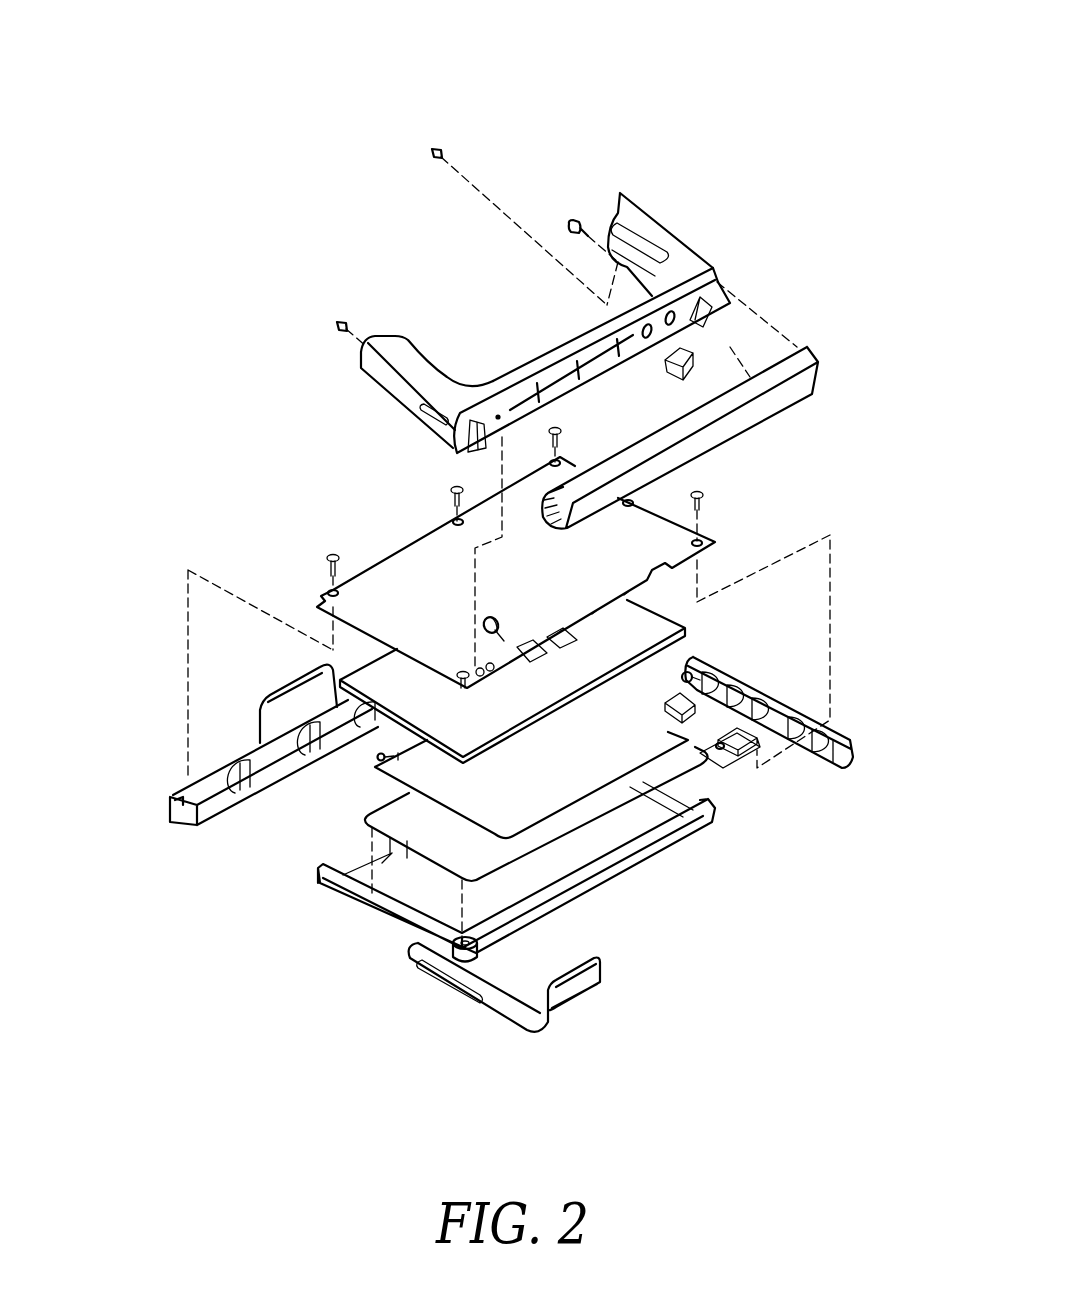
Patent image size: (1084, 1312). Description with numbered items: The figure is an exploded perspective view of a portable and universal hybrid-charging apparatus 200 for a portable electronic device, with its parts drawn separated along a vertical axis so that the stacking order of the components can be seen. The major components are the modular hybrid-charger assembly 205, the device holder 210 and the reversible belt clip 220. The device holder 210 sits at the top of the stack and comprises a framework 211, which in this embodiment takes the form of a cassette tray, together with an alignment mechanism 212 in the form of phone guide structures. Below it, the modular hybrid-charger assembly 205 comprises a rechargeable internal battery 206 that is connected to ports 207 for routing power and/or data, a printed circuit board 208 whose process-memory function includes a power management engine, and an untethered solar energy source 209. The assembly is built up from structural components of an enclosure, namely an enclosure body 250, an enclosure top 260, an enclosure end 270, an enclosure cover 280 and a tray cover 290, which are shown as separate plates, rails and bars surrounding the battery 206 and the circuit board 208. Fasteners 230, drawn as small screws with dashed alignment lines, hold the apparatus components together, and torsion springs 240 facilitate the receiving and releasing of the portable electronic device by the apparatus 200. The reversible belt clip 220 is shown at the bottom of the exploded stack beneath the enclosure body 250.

The apparatus 200 is at (840, 70).
The modular hybrid-charger assembly 205 is at (120, 568).
The rechargeable internal battery 206 is at (628, 614).
The ports 207 is at (706, 356).
The printed circuit board 208 is at (627, 737).
The untethered solar energy source 209 is at (372, 823).
The device holder 210 is at (878, 188).
The framework 211 is at (528, 366).
The alignment mechanism 212 is at (573, 152).
The reversible belt clip 220 is at (601, 970).
The fasteners 230 is at (432, 150).
The torsion springs 240 is at (488, 623).
The enclosure body 250 is at (382, 906).
The enclosure top 260 is at (298, 673).
The enclosure end 270 is at (782, 691).
The enclosure cover 280 is at (411, 541).
The tray cover 290 is at (836, 336).